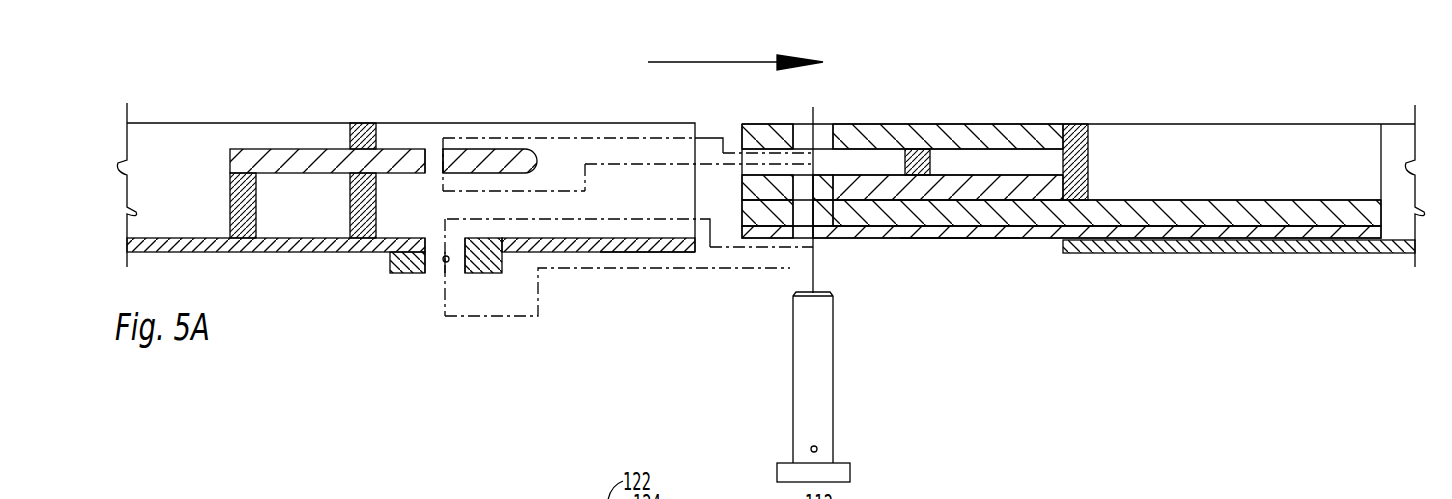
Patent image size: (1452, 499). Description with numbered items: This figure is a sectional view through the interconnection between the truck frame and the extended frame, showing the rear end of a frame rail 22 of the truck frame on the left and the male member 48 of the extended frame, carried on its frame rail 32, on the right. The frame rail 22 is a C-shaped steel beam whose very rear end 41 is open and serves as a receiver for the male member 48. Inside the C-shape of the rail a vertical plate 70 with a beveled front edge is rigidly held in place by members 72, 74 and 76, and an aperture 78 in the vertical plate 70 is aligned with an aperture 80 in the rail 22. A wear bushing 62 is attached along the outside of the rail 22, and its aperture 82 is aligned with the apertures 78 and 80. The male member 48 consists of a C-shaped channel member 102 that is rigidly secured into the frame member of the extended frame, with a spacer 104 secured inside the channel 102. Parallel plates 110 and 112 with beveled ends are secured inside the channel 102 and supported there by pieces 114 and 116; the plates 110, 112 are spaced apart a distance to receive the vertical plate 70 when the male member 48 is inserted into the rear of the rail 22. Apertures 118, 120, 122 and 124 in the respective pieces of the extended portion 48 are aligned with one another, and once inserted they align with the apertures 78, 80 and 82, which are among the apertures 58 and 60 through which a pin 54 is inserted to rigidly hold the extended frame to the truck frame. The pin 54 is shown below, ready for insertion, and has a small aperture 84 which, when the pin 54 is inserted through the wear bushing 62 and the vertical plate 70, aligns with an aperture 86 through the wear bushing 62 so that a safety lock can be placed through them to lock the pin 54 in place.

The frame rail 22 is at (302, 248).
The frame rail 32 is at (1230, 253).
The rear end 41 is at (634, 253).
The male member 48 is at (960, 238).
The pin 54 is at (778, 466).
The aperture 58 is at (433, 140).
The aperture 60 is at (826, 127).
The wear bushing 62 is at (400, 273).
The vertical plate 70 is at (292, 149).
The member 72 is at (364, 124).
The member 74 is at (357, 206).
The member 76 is at (236, 190).
The aperture 78 is at (462, 160).
The aperture 80 is at (433, 255).
The aperture 82 is at (446, 256).
The aperture 84 is at (812, 447).
The aperture 86 is at (449, 265).
The C-shaped channel member 102 is at (978, 238).
The spacer 104 is at (1165, 207).
The plate 110 is at (960, 185).
The plate 112 is at (948, 133).
The piece 114 is at (1089, 150).
The piece 116 is at (910, 149).
The aperture 118 is at (806, 238).
The aperture 120 is at (818, 220).
The aperture 122 is at (805, 190).
The aperture 124 is at (800, 138).